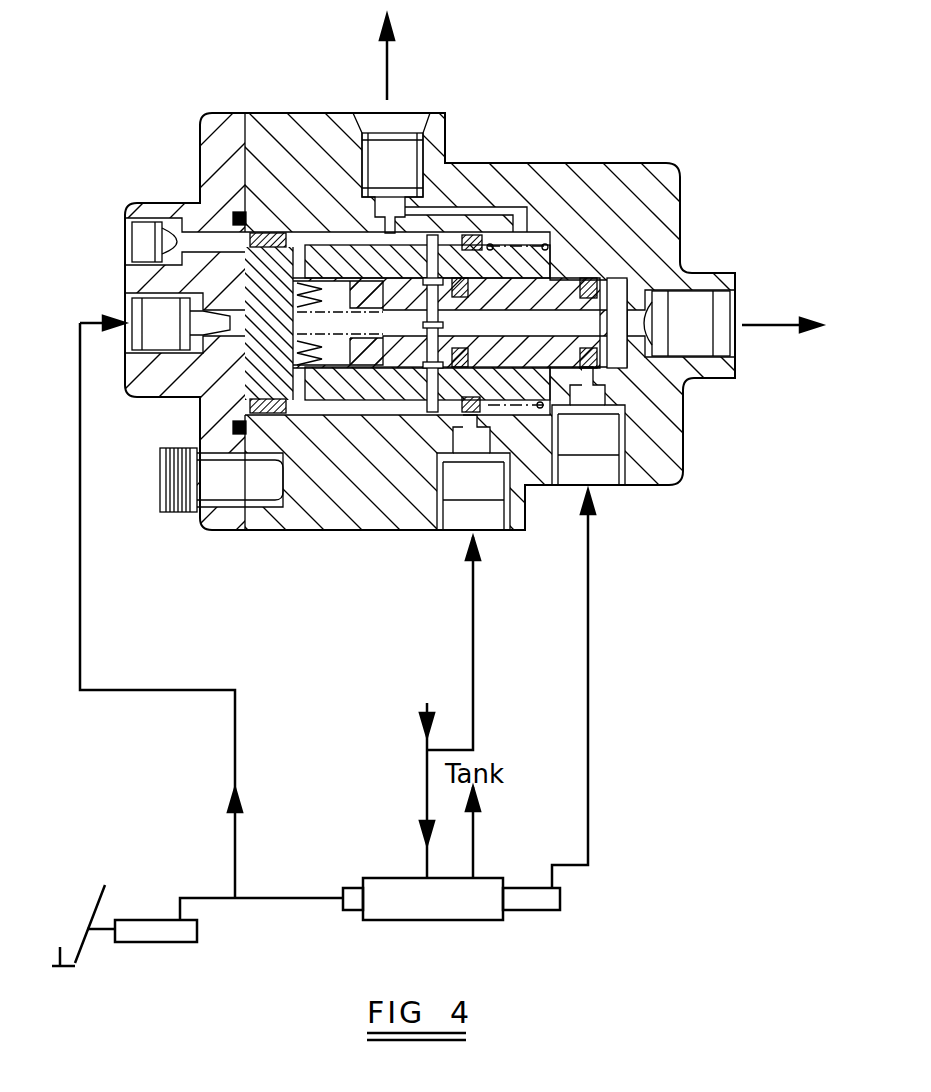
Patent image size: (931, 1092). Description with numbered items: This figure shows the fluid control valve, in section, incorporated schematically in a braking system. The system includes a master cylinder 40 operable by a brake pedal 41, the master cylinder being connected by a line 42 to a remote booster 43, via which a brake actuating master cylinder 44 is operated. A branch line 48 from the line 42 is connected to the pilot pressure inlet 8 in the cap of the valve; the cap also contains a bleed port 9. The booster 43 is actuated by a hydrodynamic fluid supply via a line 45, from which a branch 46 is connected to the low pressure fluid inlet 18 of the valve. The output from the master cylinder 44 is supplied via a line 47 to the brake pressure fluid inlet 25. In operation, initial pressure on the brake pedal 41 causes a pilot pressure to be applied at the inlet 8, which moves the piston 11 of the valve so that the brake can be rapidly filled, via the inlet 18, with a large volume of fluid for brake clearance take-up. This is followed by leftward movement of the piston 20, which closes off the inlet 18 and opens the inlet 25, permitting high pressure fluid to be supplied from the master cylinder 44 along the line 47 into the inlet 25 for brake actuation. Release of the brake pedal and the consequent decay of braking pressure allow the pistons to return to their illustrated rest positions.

The pilot pressure inlet port 8 is at (152, 318).
The bleed port 9 is at (140, 248).
The piston 11 is at (278, 378).
The low pressure fluid inlet 18 is at (467, 490).
The piston 20 is at (563, 298).
The brake pressure fluid inlet 25 is at (602, 443).
The master cylinder 40 is at (147, 928).
The brake pedal 41 is at (86, 937).
The line 42 is at (200, 897).
The remote booster 43 is at (402, 895).
The brake actuating master cylinder 44 is at (549, 906).
The line 45 is at (427, 780).
The branch 46 is at (478, 650).
The line 47 is at (592, 588).
The branch line 48 is at (170, 688).